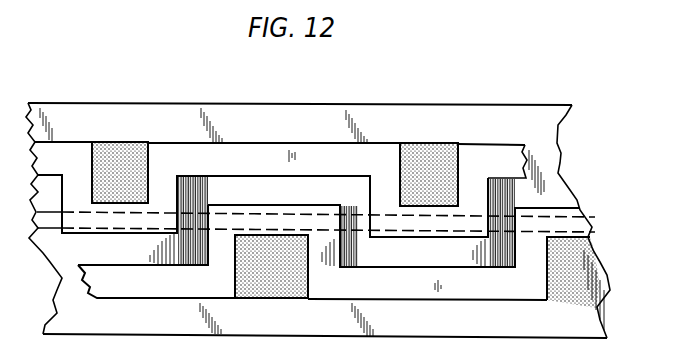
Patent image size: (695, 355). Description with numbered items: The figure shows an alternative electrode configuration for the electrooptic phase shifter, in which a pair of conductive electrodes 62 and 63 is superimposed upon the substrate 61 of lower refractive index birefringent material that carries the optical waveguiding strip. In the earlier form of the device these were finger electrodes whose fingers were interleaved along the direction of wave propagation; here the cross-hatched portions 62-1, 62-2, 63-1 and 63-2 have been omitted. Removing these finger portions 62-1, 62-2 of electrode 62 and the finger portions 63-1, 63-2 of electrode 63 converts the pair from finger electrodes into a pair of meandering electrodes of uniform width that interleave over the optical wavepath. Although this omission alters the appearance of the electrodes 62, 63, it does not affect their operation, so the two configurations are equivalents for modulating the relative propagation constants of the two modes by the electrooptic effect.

The substrate 61 is at (180, 118).
The electrode 62 is at (132, 276).
The electrode 63 is at (268, 163).
The finger of electrode 63 63-1 is at (430, 162).
The finger of electrode 63 63-2 is at (117, 160).
The finger of electrode 62 62-1 is at (574, 280).
The finger of electrode 62 62-2 is at (272, 270).